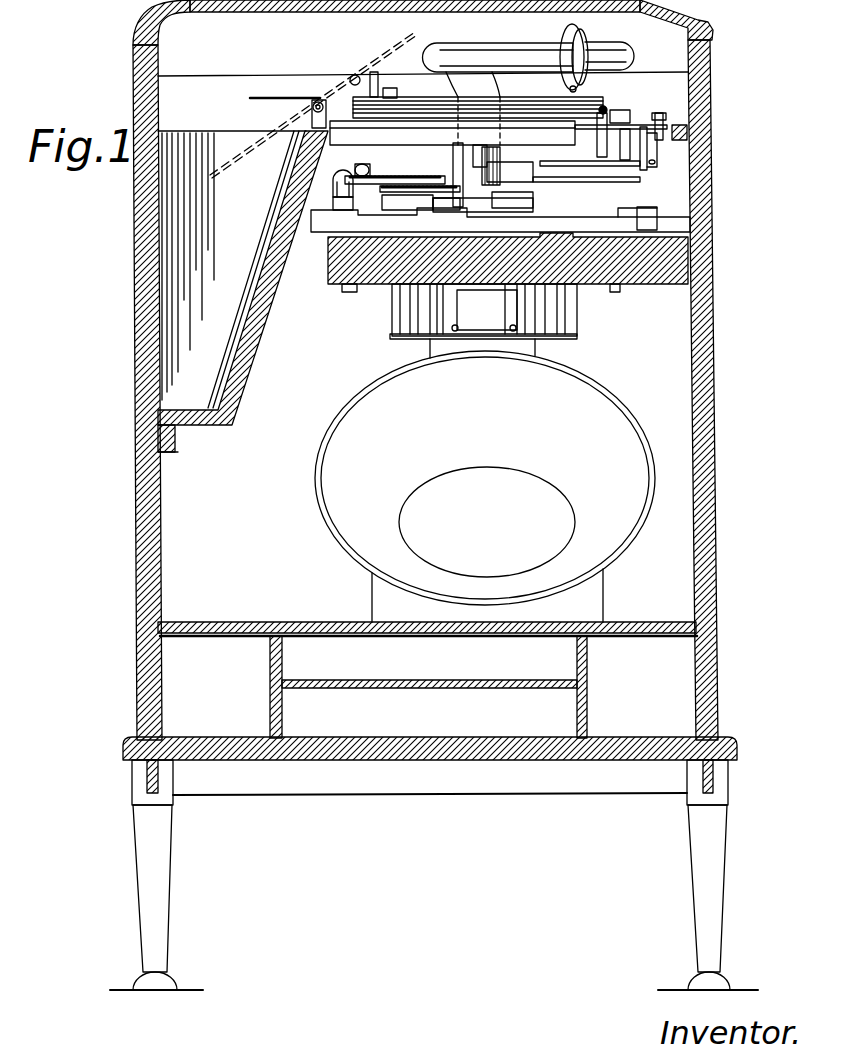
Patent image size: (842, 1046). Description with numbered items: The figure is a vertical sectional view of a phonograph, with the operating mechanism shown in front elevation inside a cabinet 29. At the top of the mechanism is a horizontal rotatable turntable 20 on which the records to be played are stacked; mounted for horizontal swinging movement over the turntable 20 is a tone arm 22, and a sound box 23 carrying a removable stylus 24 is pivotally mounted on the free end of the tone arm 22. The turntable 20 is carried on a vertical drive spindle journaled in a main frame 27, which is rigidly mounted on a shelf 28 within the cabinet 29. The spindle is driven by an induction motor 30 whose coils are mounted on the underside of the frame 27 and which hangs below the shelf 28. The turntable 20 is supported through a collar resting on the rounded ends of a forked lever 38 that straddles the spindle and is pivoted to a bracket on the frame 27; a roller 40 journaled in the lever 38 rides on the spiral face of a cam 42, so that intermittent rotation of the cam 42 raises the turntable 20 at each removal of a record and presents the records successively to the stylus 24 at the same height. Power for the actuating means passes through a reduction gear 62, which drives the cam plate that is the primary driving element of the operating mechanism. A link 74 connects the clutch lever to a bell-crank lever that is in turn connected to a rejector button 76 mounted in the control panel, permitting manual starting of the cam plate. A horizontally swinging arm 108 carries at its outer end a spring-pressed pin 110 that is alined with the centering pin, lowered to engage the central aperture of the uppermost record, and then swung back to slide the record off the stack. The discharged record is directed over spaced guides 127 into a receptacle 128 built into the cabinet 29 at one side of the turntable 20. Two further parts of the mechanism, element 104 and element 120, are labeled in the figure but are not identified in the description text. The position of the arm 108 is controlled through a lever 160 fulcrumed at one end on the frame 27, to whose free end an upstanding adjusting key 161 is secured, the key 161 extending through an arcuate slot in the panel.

The turntable 20 is at (518, 126).
The tone arm 22 is at (499, 48).
The sound box 23 is at (578, 35).
The stylus 24 is at (575, 97).
The main frame 27 is at (343, 215).
The shelf 28 is at (328, 271).
The cabinet 29 is at (719, 418).
The induction motor 30 is at (393, 320).
The forked lever 38 is at (457, 160).
The roller 40 is at (477, 169).
The cam 42 is at (482, 197).
The reduction gear 62 is at (400, 201).
The link 74 is at (640, 188).
The rejector button 76 is at (661, 114).
The post 104 is at (608, 110).
The horizontally swinging arm 108 is at (373, 77).
The spring-pressed pin 110 is at (390, 93).
The roller 120 is at (372, 157).
The guides 127 is at (308, 117).
The receptacle 128 is at (253, 357).
The lever 160 is at (582, 160).
The adjusting key 161 is at (610, 117).